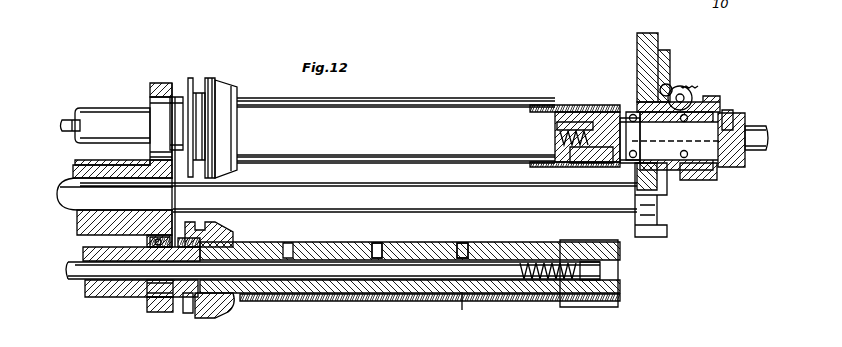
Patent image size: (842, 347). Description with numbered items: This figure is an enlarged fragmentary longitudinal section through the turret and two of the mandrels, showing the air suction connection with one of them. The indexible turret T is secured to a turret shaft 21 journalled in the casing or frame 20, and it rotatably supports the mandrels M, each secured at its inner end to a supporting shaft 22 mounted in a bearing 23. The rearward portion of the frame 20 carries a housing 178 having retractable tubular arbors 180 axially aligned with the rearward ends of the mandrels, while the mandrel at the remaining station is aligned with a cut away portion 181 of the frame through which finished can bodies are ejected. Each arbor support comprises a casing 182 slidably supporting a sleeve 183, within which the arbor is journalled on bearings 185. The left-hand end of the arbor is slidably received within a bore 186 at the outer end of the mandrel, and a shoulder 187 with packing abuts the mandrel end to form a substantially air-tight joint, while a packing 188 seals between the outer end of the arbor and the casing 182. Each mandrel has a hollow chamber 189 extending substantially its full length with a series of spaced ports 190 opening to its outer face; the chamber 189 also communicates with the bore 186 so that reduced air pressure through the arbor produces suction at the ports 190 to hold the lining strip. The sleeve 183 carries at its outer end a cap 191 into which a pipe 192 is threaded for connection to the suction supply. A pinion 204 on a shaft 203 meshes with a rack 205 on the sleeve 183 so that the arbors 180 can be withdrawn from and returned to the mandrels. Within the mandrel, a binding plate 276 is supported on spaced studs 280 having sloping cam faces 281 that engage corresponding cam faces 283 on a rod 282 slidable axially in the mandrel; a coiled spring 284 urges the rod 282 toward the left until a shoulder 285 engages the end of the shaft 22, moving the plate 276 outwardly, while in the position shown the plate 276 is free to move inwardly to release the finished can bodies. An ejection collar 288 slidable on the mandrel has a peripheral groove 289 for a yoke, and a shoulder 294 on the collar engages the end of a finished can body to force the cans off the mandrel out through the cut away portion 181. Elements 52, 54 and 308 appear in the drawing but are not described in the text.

The casing or frame 20 is at (640, 238).
The turret shaft 21 is at (347, 203).
The supporting shaft 22 is at (112, 125).
The bearing 23 is at (152, 112).
The tube 52 is at (396, 130).
The sleeve 54 is at (453, 311).
The housing 178 is at (662, 52).
The retractable tubular arbor 180 is at (676, 176).
The cut away portion 181 is at (668, 232).
The casing 182 is at (720, 175).
The sleeve 183 is at (720, 105).
The bearing 185 is at (630, 163).
The bore 186 is at (604, 106).
The shoulder 187 is at (640, 118).
The packing 188 is at (585, 167).
The hollow chamber 189 is at (553, 108).
The port 190 is at (565, 102).
The cap 191 is at (742, 126).
The pipe 192 is at (764, 140).
The shaft 203 is at (692, 100).
The pinion 204 is at (684, 88).
The rack 205 is at (672, 84).
The binding plate 276 is at (447, 160).
The stud 280 is at (310, 243).
The cam face 281 is at (470, 246).
The rod 282 is at (68, 121).
The cam face 283 is at (395, 242).
The coiled spring 284 is at (558, 132).
The shoulder 285 is at (215, 319).
The ejection collar 288 is at (190, 78).
The peripheral groove 289 is at (206, 80).
The shoulder 294 is at (250, 131).
The cone 308 is at (233, 93).
The mandrel M is at (460, 132).
The indexible turret T is at (78, 226).